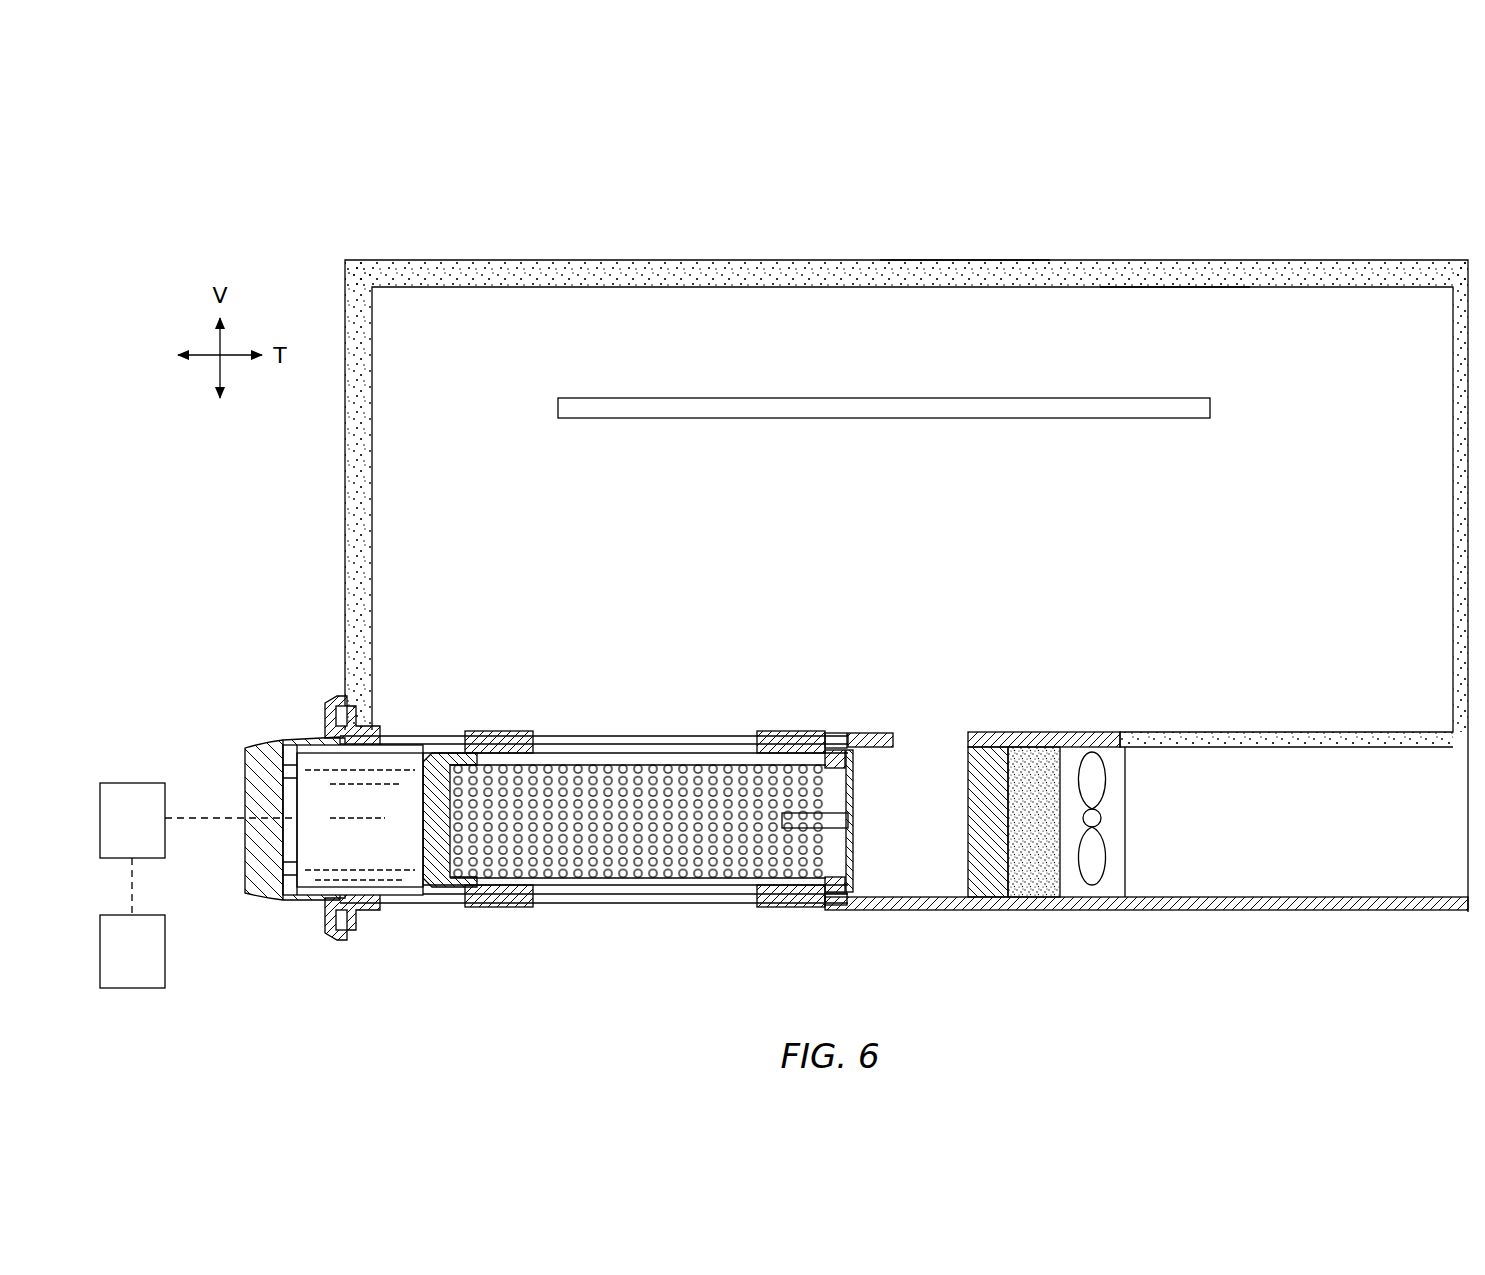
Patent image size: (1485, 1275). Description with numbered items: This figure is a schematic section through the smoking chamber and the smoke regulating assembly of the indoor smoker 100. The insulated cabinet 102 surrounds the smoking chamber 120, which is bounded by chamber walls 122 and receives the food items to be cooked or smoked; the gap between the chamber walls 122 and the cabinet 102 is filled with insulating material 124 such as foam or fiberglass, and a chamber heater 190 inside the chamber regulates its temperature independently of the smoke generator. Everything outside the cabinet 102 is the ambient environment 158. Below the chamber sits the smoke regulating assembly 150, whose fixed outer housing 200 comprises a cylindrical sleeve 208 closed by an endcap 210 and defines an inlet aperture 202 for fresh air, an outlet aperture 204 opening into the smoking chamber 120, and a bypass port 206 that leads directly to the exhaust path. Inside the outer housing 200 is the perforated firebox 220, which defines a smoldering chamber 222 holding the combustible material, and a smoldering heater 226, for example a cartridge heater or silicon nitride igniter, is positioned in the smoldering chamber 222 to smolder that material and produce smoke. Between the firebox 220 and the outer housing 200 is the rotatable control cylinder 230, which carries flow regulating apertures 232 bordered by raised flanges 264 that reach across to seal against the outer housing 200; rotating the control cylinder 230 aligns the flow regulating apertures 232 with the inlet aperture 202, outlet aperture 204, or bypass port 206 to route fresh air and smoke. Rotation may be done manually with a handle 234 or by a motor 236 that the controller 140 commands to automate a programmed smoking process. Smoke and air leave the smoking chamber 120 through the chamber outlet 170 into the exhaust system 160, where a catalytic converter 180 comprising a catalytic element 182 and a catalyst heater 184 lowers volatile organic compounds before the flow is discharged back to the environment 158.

The indoor smoker 100 is at (346, 226).
The cabinet 102 is at (1232, 250).
The smoking chamber 120 is at (866, 509).
The chamber walls 122 is at (1158, 288).
The insulating material 124 is at (935, 272).
The controller 140 is at (113, 964).
The smoke regulating assembly 150 is at (540, 962).
The ambient environment 158 is at (161, 505).
The exhaust system 160 is at (1100, 914).
The chamber outlet 170 is at (925, 718).
The catalytic converter 180 is at (968, 915).
The catalytic element 182 is at (1035, 752).
The catalyst heater 184 is at (985, 765).
The chamber heater 190 is at (735, 408).
The outer housing 200 is at (790, 908).
The inlet aperture 202 is at (640, 905).
The outlet aperture 204 is at (625, 733).
The bypass port 206 is at (855, 750).
The cylindrical sleeve 208 is at (500, 904).
The endcap 210 is at (855, 848).
The firebox 220 is at (665, 865).
The smoldering chamber 222 is at (688, 808).
The smoldering heater 226 is at (832, 822).
The control cylinder 230 is at (440, 765).
The flow regulating apertures 232 is at (590, 887).
The handle 234 is at (250, 770).
The motor 236 is at (113, 834).
The raised flanges 264 is at (500, 745).